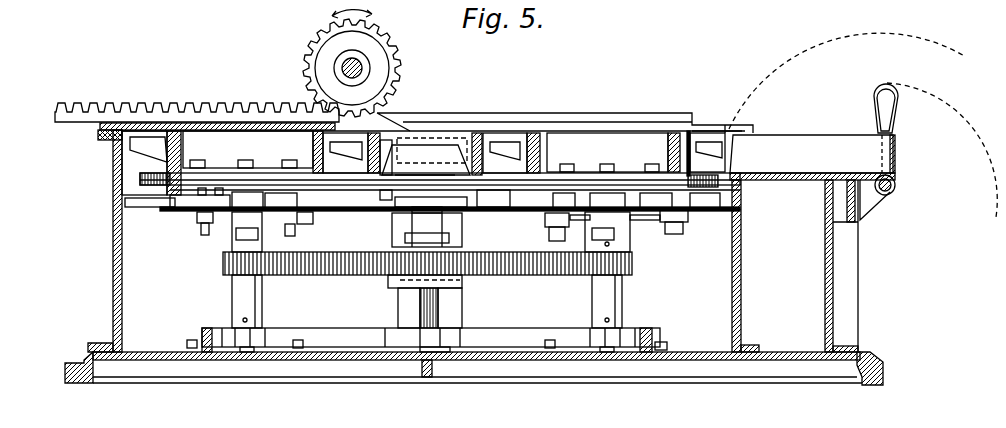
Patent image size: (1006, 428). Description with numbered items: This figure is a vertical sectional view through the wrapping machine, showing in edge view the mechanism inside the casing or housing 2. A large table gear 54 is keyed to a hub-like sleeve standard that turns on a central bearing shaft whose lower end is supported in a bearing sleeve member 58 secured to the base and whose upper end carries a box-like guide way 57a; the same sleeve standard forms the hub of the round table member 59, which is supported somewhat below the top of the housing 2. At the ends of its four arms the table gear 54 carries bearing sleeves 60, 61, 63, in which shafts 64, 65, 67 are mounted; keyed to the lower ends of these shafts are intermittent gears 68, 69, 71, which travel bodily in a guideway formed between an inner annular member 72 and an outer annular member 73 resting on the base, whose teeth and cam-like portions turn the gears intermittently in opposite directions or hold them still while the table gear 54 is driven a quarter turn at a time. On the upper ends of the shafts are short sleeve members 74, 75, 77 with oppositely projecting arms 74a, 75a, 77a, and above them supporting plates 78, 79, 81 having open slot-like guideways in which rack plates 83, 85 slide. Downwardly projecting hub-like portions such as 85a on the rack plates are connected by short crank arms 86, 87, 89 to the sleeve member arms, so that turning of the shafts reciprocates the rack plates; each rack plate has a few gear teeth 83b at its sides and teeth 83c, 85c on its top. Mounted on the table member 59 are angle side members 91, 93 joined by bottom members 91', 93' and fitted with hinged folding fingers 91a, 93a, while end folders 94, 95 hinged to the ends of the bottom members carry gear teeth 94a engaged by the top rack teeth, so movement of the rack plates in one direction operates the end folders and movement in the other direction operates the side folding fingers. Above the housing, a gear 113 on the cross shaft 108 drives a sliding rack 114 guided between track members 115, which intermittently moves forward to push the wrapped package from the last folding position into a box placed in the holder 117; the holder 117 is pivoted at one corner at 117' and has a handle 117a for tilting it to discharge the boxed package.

The casing or housing 2 is at (112, 258).
The table gear 54 is at (527, 275).
The box-like guide way 57a is at (432, 140).
The bearing sleeve member 58 is at (455, 309).
The round table member 59 is at (140, 180).
The bearing sleeve 60 is at (426, 304).
The bearing sleeve 61 is at (256, 300).
The bearing sleeve 63 is at (607, 295).
The shaft 64 is at (423, 362).
The shaft 65 is at (247, 352).
The shaft 67 is at (612, 352).
The intermittent gear 68 is at (445, 340).
The intermittent gear 69 is at (265, 338).
The intermittent gear 71 is at (622, 345).
The inner annular member 72 is at (318, 340).
The outer annular member 73 is at (205, 335).
The sleeve member 74 is at (398, 244).
The arm 74a is at (400, 232).
The sleeve member 75 is at (232, 240).
The arm 75a is at (258, 230).
The sleeve member 77 is at (612, 240).
The arm 77a is at (602, 224).
The supporting plate 78 is at (465, 205).
The supporting plate 79 is at (135, 205).
The supporting plate 81 is at (602, 204).
The rack plate 83 is at (200, 207).
The gear teeth 83b is at (204, 214).
The gear teeth 83c is at (214, 194).
The rack plate 85 is at (545, 217).
The hub-like portion 85a is at (557, 240).
The gear teeth 85c is at (575, 194).
The crank arm 86 is at (450, 222).
The crank arm 87 is at (206, 226).
The crank arm 89 is at (578, 220).
The angle side member 91 is at (484, 163).
The bottom member 91' is at (253, 152).
The hinged folding finger 91a is at (152, 148).
The angle side member 93 is at (566, 153).
The bottom member 93' is at (589, 164).
The hinged folding finger 93a is at (508, 162).
The end folder 94 is at (440, 162).
The gear teeth 94a is at (462, 160).
The end folder 95 is at (167, 161).
The shaft 108 is at (342, 68).
The gear 113 is at (328, 48).
The sliding rack 114 is at (218, 115).
The track member 115 is at (575, 118).
The holder 117 is at (863, 125).
The handle 117a is at (895, 113).
The pivot 117' is at (901, 197).